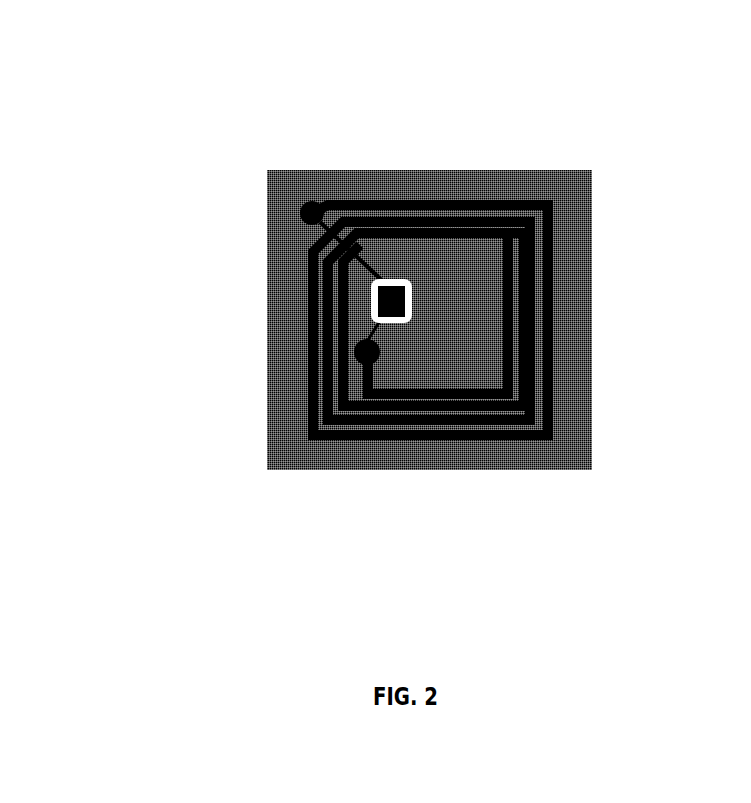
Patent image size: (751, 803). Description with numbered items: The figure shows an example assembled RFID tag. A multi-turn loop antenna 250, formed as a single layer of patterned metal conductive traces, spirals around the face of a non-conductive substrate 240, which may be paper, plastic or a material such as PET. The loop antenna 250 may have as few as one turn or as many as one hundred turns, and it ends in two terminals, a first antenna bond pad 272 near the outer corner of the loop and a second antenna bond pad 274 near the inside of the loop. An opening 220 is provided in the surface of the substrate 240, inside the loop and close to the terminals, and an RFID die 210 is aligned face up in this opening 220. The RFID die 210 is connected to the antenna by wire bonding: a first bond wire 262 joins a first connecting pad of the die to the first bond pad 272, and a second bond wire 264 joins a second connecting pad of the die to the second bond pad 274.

The RFID die 210 is at (397, 285).
The opening 220 is at (418, 285).
The substrate 240 is at (578, 452).
The multi-turn loop antenna 250 is at (433, 440).
The first bond wire 262 is at (357, 265).
The second bond wire 264 is at (367, 328).
The first antenna bond pad 272 is at (300, 203).
The second antenna bond pad 274 is at (352, 363).